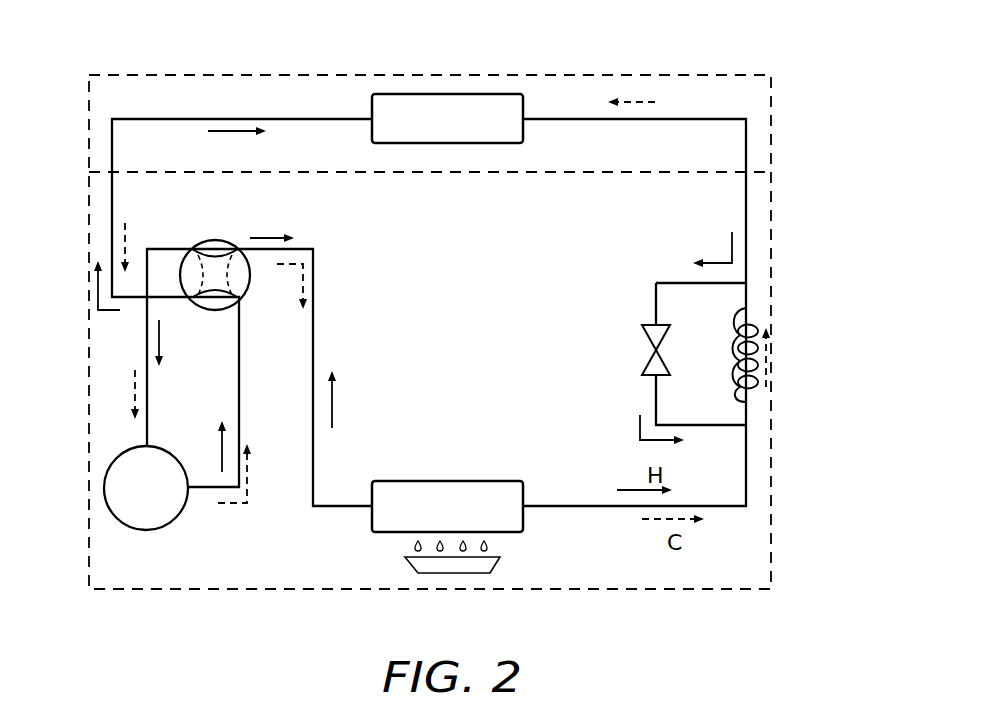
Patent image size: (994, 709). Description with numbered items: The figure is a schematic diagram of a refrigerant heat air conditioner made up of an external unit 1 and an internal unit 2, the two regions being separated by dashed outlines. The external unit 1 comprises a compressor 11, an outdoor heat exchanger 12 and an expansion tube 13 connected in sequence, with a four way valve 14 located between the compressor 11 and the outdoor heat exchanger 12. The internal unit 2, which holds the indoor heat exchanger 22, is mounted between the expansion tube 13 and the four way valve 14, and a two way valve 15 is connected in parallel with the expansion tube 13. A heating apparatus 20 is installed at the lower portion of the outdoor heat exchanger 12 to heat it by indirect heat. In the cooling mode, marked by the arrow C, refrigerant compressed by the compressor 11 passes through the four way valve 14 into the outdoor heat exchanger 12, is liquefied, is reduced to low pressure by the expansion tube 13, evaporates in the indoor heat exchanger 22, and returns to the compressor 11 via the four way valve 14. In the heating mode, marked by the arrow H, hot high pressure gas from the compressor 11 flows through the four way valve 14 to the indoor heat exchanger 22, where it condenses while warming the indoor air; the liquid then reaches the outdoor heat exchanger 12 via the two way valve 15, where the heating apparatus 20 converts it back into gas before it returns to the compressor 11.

The external unit 1 is at (771, 222).
The internal unit 2 is at (769, 108).
The compressor 11 is at (122, 512).
The outdoor heat exchanger 12 is at (433, 497).
The expansion tube 13 is at (745, 320).
The four way valve 14 is at (208, 246).
The two way valve 15 is at (648, 328).
The heating apparatus 20 is at (486, 565).
The indoor heat exchanger 22 is at (382, 102).